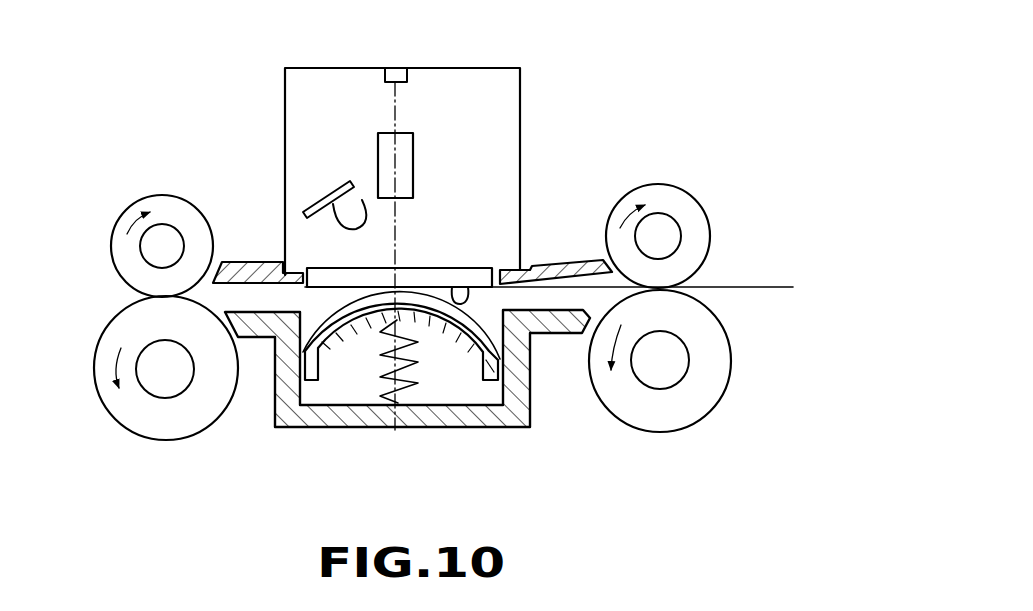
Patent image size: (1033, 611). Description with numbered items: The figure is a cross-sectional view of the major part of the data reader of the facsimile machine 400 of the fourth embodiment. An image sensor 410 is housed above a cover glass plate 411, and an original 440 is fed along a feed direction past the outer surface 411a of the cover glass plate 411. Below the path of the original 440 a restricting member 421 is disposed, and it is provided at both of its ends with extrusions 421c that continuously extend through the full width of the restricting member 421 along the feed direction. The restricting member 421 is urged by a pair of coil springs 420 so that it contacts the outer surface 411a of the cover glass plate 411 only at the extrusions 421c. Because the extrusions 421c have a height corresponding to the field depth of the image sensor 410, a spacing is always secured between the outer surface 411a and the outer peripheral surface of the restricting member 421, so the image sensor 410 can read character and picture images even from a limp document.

The facsimile machine 400 is at (628, 125).
The image sensor 410 is at (283, 138).
The cover glass plate 411 is at (458, 225).
The outer surface of cover glass plate 411a is at (447, 292).
The coil springs 420 is at (384, 398).
The restricting member 421 is at (465, 390).
The extrusions 421c is at (530, 367).
The original 440 is at (768, 285).